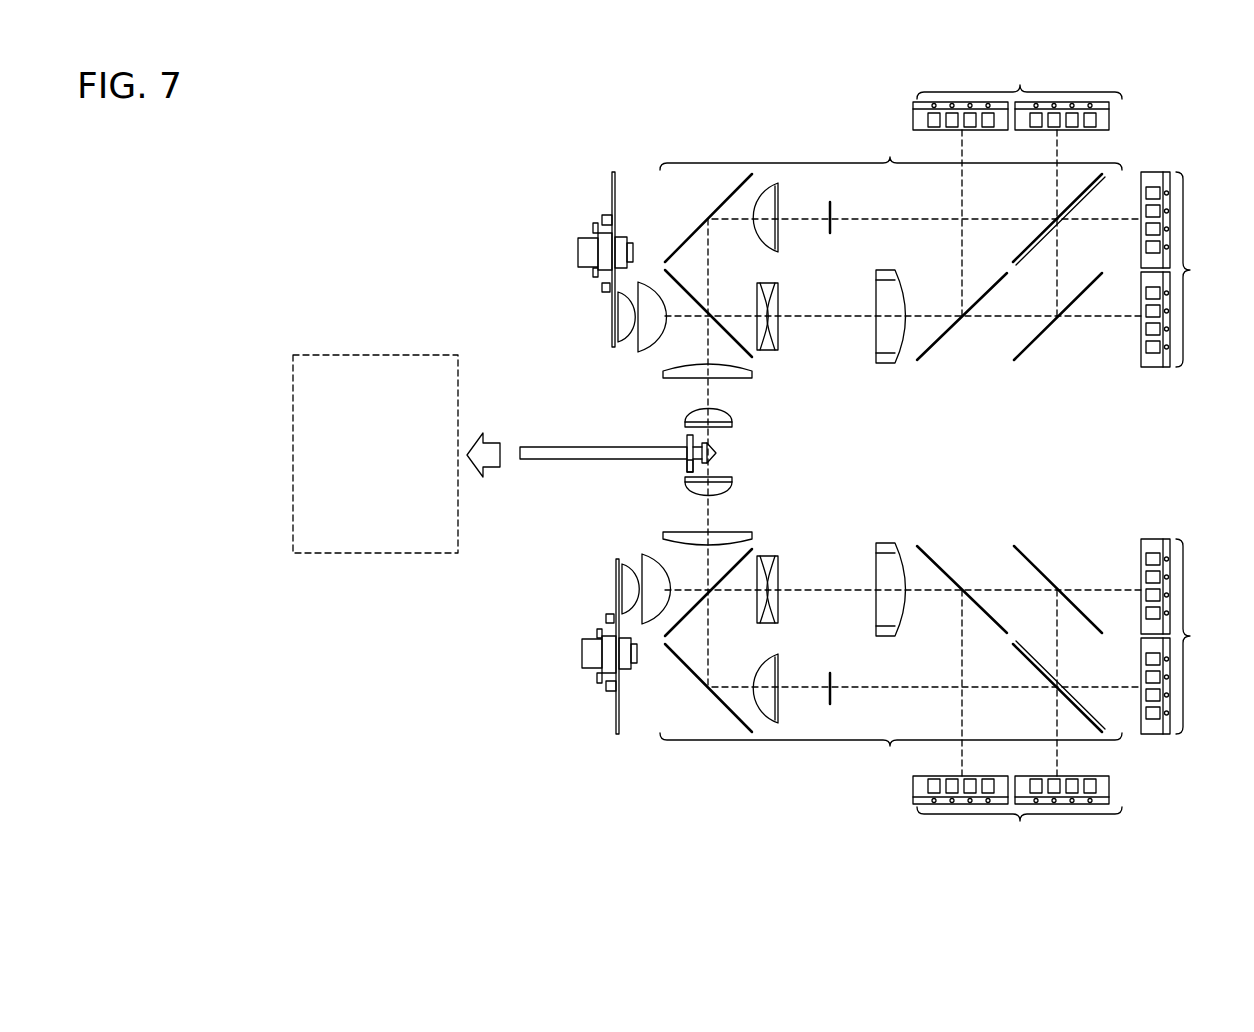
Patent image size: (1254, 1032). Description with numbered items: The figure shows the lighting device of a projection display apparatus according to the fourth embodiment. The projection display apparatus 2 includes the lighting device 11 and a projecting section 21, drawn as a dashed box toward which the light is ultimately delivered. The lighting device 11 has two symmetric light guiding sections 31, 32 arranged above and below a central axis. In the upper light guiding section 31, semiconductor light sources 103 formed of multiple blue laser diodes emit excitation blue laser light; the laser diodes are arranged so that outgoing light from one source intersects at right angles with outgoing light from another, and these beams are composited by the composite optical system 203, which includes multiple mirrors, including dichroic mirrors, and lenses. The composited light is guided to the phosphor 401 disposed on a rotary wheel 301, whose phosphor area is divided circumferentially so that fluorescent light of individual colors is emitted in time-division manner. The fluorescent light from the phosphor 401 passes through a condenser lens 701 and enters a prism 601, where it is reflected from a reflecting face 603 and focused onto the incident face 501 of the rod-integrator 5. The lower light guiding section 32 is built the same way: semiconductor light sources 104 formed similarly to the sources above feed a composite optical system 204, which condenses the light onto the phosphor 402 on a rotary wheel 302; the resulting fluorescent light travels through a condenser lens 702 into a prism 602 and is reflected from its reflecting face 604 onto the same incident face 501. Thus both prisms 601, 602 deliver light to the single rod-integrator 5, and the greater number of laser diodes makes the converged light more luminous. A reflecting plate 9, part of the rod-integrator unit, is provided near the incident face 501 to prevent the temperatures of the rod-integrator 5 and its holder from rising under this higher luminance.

The projection display apparatus 2 is at (521, 157).
The rod-integrator 5 is at (535, 447).
The reflecting plate 9 is at (686, 468).
The lighting device 11 is at (449, 260).
The projecting section 21 is at (385, 355).
The light guiding section 31 is at (789, 145).
The light guiding section 32 is at (793, 778).
The semiconductor light source 103 is at (1076, 210).
The semiconductor light source 104 is at (1076, 697).
The composite optical system 203 is at (891, 149).
The composite optical system 204 is at (891, 757).
The rotary wheel 301 is at (578, 250).
The rotary wheel 302 is at (587, 655).
The phosphor 401 is at (612, 348).
The phosphor 402 is at (620, 565).
The incident face 501 is at (686, 447).
The prism 601 is at (716, 446).
The prism 602 is at (716, 462).
The reflecting face 603 is at (716, 451).
The reflecting face 604 is at (716, 457).
The condenser lens 701 is at (720, 413).
The condenser lens 702 is at (720, 495).